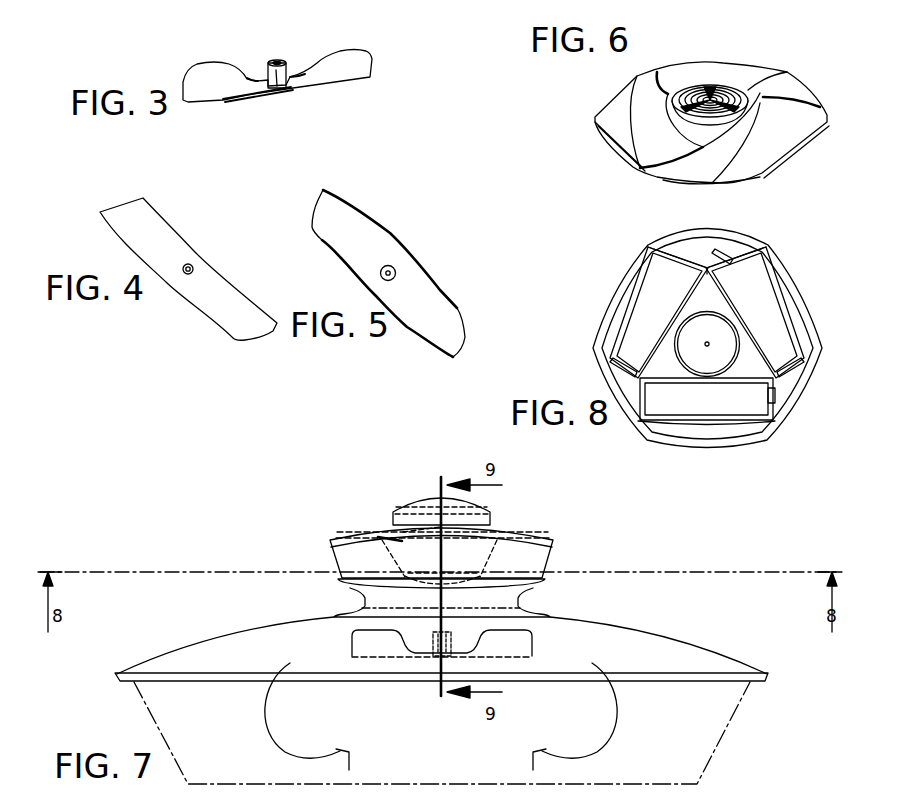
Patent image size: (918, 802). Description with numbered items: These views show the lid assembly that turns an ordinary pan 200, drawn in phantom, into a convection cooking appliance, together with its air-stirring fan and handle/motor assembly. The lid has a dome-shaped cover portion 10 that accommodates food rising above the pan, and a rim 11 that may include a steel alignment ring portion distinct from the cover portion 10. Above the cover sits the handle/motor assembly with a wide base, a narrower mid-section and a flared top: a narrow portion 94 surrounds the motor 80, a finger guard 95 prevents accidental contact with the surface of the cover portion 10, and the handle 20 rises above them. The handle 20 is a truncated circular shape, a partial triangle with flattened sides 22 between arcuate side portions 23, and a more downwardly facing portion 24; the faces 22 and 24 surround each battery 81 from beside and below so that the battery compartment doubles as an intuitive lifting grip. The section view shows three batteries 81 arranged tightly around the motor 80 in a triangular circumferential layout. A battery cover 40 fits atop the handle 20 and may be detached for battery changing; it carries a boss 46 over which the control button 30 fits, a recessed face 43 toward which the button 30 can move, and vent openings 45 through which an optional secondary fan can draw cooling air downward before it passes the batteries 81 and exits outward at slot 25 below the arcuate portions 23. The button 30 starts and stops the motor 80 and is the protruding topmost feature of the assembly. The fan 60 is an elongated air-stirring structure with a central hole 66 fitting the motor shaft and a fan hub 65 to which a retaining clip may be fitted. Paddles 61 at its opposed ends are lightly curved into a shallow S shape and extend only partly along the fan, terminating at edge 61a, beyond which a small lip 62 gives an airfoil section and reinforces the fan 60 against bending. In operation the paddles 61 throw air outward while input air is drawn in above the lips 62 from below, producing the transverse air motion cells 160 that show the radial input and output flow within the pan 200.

In FIG. 7, the cover portion 10 is at (636, 656).
In FIG. 7, the rim 11 is at (768, 678).
In FIG. 7, the handle 20 is at (414, 547).
In FIG. 8, the flattened sides 22 is at (785, 295).
In FIG. 7, the flattened sides 22 is at (340, 547).
In FIG. 8, the arcuate side portions 23 is at (800, 401).
In FIG. 7, the downwardly facing portion 24 is at (350, 580).
In FIG. 7, the slot 25 is at (449, 577).
In FIG. 7, the control button 30 is at (422, 497).
In FIG. 6, the battery cover 40 is at (713, 64).
In FIG. 6, the recessed face 43 is at (665, 170).
In FIG. 6, the vent openings 45 is at (672, 98).
In FIG. 6, the boss 46 is at (680, 122).
In FIG. 4, the fan 60 is at (226, 308).
In FIG. 7, the fan 60 is at (516, 639).
In FIG. 3, the paddles 61 is at (196, 78).
In FIG. 5, the paddles 61 is at (352, 207).
In FIG. 3, the edge 61a is at (236, 65).
In FIG. 3, the lip 62 is at (247, 99).
In FIG. 5, the lip 62 is at (325, 254).
In FIG. 3, the fan hub 65 is at (278, 72).
In FIG. 3, the central hole 66 is at (282, 61).
In FIG. 4, the central hole 66 is at (192, 266).
In FIG. 5, the central hole 66 is at (388, 273).
In FIG. 8, the motor 80 is at (705, 355).
In FIG. 8, the batteries 81 is at (655, 328).
In FIG. 7, the narrow portion 94 is at (518, 597).
In FIG. 7, the finger guard 95 is at (532, 607).
In FIG. 7, the transverse air motion cells 160 is at (268, 717).
In FIG. 7, the pan 200 is at (715, 754).